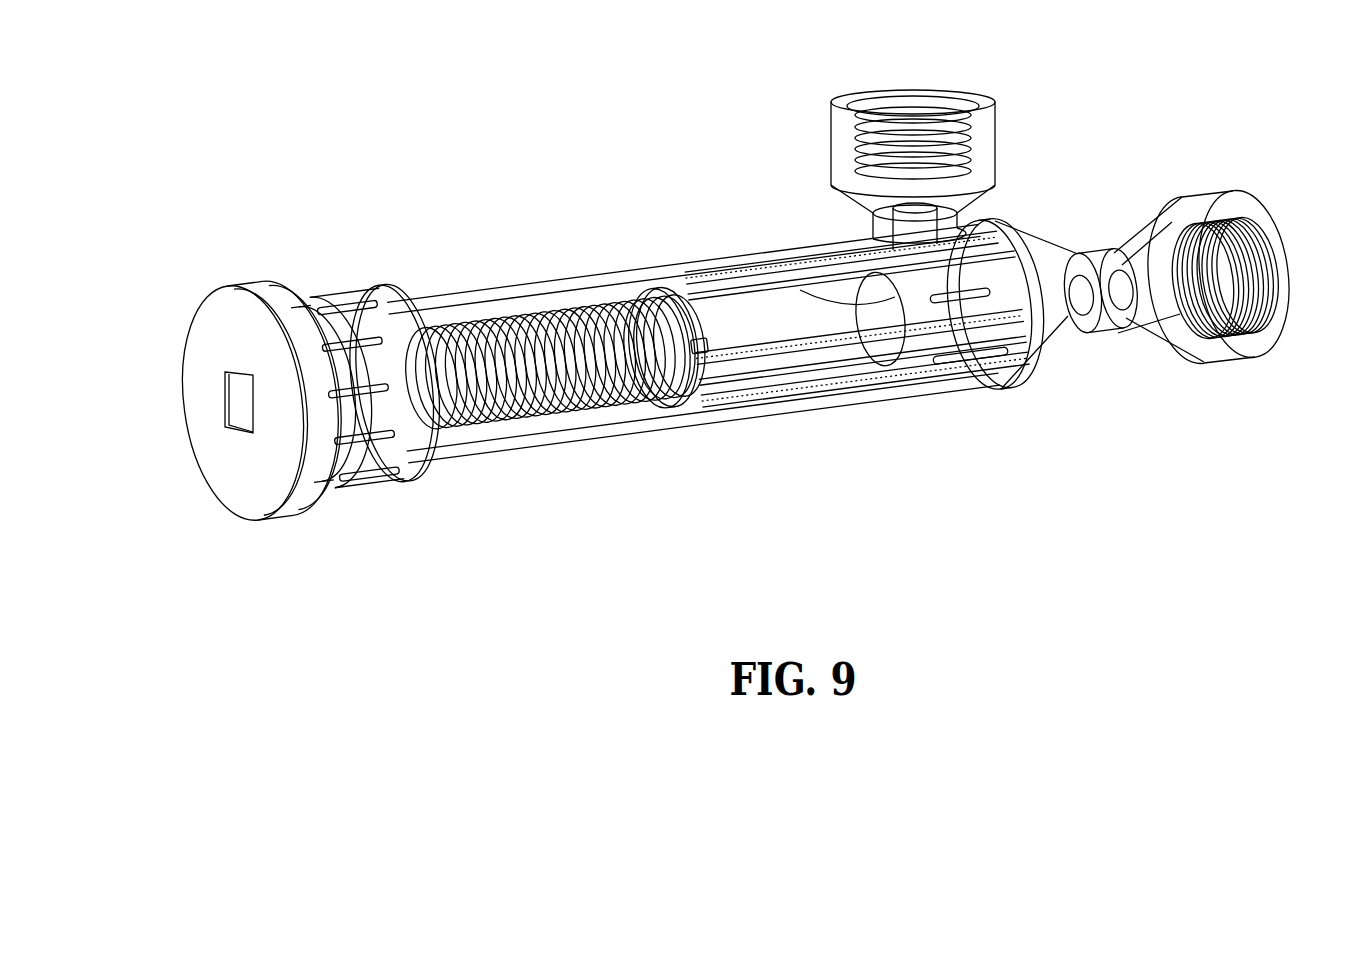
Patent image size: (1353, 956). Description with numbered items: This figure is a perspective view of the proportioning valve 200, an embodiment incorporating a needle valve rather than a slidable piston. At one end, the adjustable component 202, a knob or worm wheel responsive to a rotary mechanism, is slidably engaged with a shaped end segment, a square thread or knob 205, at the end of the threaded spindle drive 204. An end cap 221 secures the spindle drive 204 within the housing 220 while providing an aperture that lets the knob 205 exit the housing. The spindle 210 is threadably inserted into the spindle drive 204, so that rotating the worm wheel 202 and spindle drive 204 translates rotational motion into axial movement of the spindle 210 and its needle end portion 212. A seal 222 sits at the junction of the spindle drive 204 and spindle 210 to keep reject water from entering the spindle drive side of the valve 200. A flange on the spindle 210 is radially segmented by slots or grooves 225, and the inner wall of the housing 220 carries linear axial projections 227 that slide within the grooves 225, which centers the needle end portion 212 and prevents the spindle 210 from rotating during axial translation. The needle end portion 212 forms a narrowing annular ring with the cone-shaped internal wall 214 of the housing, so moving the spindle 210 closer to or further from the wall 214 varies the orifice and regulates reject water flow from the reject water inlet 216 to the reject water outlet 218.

The proportioning valve 200 is at (478, 146).
The adjustable component 202 is at (293, 497).
The spindle drive 204 is at (525, 412).
The square thread or knob 205 is at (237, 397).
The spindle 210 is at (718, 292).
The needle end portion 212 is at (773, 288).
The internal wall 214 is at (1048, 342).
The reject water inlet 216 is at (995, 129).
The reject water outlet 218 is at (1238, 362).
The housing 220 is at (735, 421).
The end cap 221 is at (373, 480).
The seal 222 is at (662, 404).
The slot or groove 225 is at (777, 347).
The axial projections 227 is at (1018, 355).